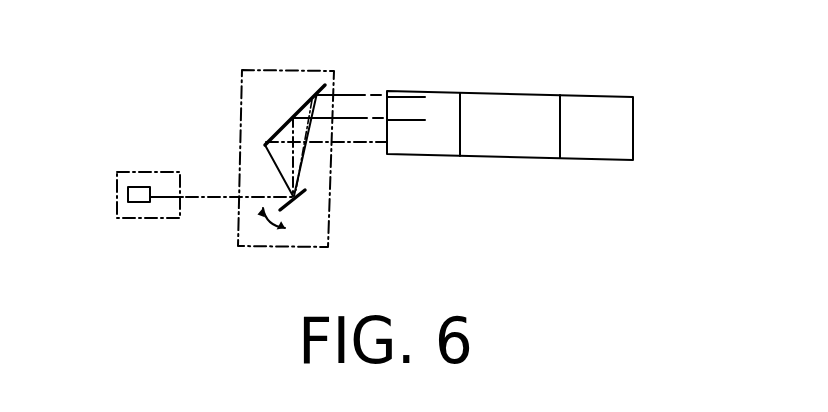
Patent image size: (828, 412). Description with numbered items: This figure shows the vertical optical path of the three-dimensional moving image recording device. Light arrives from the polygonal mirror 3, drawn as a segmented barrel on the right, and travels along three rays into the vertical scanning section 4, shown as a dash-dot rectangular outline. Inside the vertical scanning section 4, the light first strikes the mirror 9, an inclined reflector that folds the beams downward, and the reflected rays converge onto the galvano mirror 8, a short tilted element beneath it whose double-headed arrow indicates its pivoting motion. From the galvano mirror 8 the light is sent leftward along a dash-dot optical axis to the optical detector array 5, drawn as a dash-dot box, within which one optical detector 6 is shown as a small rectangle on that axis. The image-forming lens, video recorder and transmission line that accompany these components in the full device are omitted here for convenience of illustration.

The polygonal mirror 3 is at (510, 95).
The vertical scanning section 4 is at (272, 70).
The optical detector array 5 is at (158, 172).
The optical detector 6 is at (142, 187).
The galvano mirror 8 is at (300, 192).
The mirror 9 is at (297, 120).